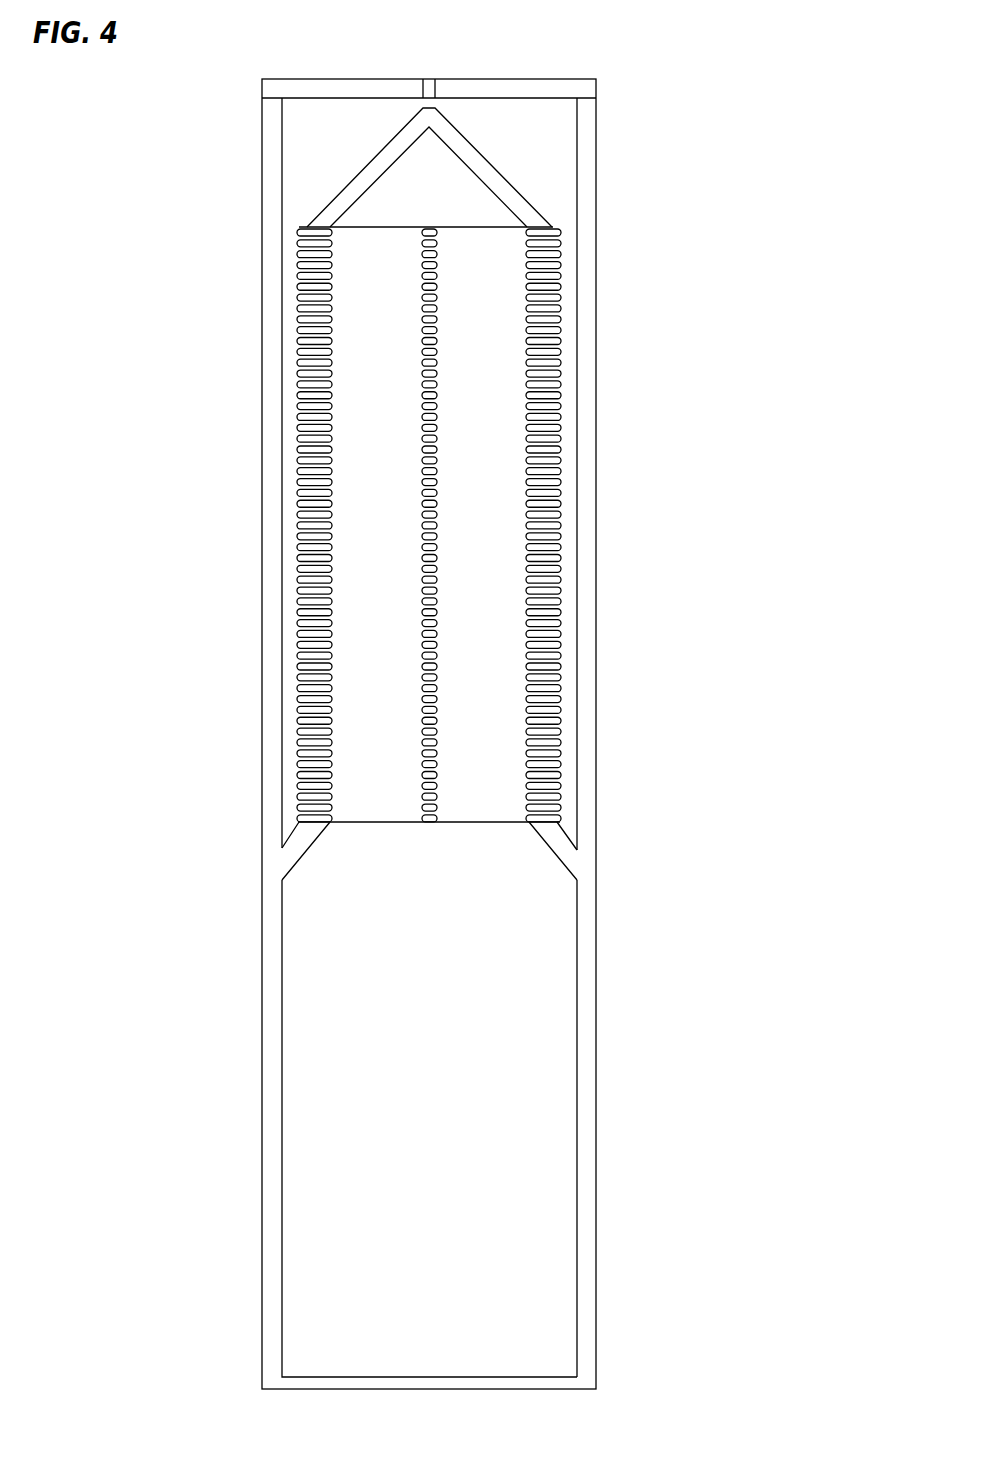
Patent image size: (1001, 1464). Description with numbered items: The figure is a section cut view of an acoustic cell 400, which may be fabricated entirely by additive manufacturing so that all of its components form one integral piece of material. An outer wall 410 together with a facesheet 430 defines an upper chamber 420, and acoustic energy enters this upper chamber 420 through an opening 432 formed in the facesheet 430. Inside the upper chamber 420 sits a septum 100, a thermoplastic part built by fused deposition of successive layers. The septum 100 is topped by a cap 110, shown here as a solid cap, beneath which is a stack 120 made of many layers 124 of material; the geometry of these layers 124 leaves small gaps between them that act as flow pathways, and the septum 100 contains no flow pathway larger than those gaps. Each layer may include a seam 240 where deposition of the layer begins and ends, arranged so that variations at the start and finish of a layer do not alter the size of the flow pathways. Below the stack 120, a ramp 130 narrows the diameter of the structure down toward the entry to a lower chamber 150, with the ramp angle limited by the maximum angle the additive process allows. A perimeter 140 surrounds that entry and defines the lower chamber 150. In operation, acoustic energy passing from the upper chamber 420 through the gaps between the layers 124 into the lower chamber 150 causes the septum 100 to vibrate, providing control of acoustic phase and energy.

The septum 100 is at (298, 140).
The cap 110 is at (485, 158).
The stack 120 is at (545, 627).
The layers 124 is at (570, 466).
The ramp 130 is at (568, 833).
The perimeter 140 is at (595, 942).
The lower chamber 150 is at (447, 966).
The seam 240 is at (427, 424).
The acoustic cell 400 is at (140, 424).
The wall 410 is at (597, 267).
The upper chamber 420 is at (543, 165).
The facesheet 430 is at (557, 79).
The opening 432 is at (431, 84).